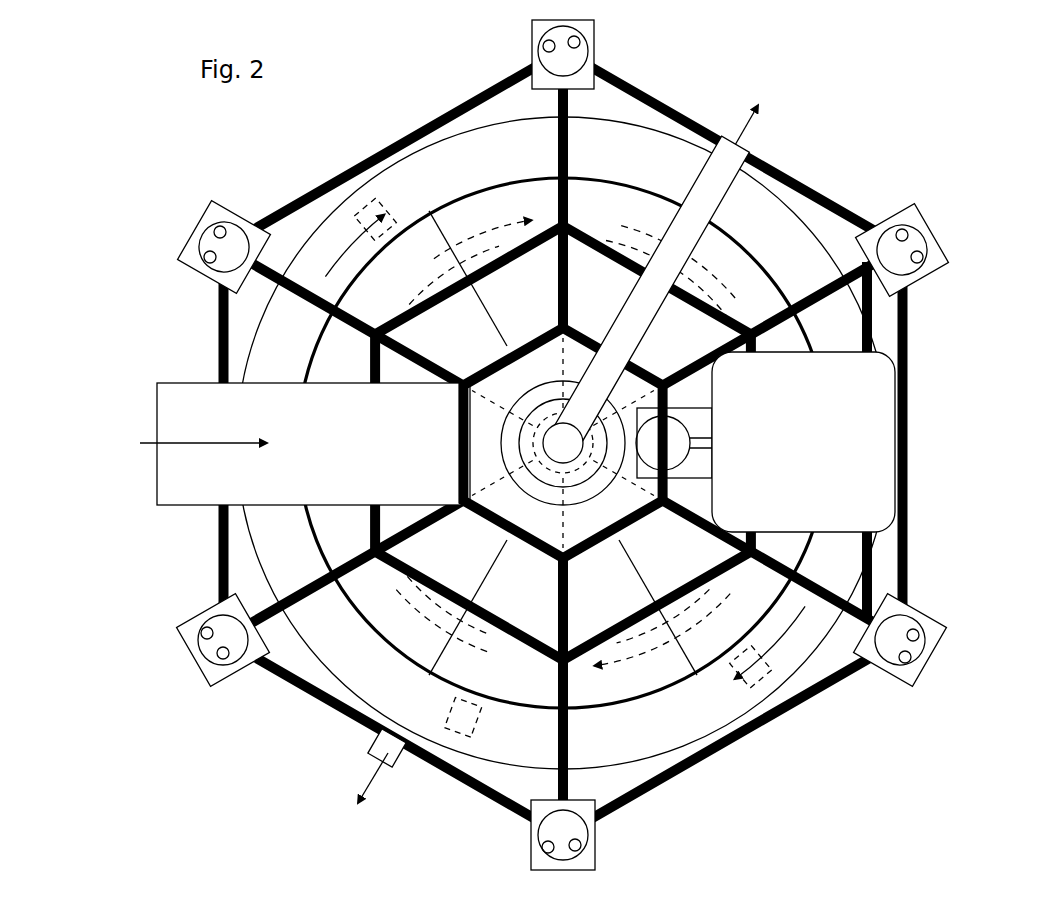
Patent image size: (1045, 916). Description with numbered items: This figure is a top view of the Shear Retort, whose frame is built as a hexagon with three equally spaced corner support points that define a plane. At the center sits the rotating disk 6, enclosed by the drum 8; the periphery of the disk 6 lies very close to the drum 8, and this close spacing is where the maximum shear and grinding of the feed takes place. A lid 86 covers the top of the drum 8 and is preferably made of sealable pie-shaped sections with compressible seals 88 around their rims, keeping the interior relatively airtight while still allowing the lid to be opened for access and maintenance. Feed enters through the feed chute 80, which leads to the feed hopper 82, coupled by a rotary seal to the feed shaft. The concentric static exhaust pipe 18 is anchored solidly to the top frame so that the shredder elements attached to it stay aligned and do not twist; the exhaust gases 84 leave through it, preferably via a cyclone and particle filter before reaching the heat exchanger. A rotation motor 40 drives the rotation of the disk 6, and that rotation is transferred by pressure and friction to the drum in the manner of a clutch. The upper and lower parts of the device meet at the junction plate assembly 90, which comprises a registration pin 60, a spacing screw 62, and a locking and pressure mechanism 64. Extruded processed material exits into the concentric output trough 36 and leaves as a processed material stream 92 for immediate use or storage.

The disk 6 is at (422, 293).
The enclosing drum 8 is at (480, 192).
The static exhaust pipe 18 is at (492, 78).
The concentric output trough 36 is at (620, 752).
The rotation motor 40 is at (782, 440).
The registration pin 60 is at (223, 658).
The spacing screw 62 is at (205, 630).
The locking and pressure mechanism 64 is at (207, 665).
The feed chute 80 is at (350, 478).
The feed hopper 82 is at (543, 528).
The exhaust gases 84 is at (757, 131).
The lid 86 is at (592, 200).
The compressible seals 88 is at (485, 306).
The junction plate assembly 90 is at (190, 645).
The processed material stream 92 is at (375, 785).